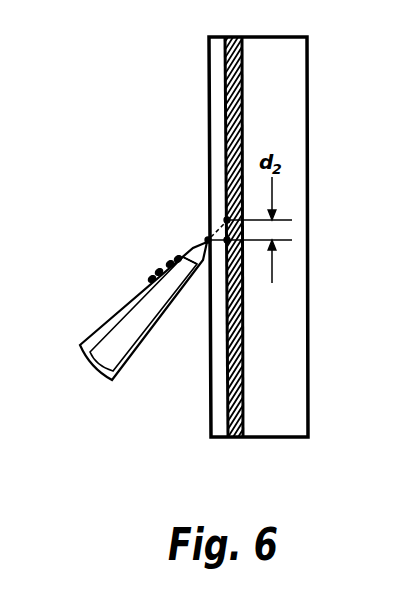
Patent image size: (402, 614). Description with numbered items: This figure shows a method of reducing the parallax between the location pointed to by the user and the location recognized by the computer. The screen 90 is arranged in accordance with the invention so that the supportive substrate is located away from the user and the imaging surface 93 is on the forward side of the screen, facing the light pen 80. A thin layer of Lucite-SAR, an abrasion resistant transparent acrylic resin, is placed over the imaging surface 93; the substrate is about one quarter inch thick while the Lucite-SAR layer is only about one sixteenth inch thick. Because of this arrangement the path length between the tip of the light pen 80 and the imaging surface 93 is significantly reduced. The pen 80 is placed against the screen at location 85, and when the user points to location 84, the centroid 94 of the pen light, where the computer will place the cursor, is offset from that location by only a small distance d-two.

The light pen 80 is at (112, 317).
The location pointed to by the user 84 is at (243, 272).
The location 85 is at (208, 240).
The screen 90 is at (210, 398).
The imaging surface 93 is at (225, 65).
The centroid 94 is at (227, 220).